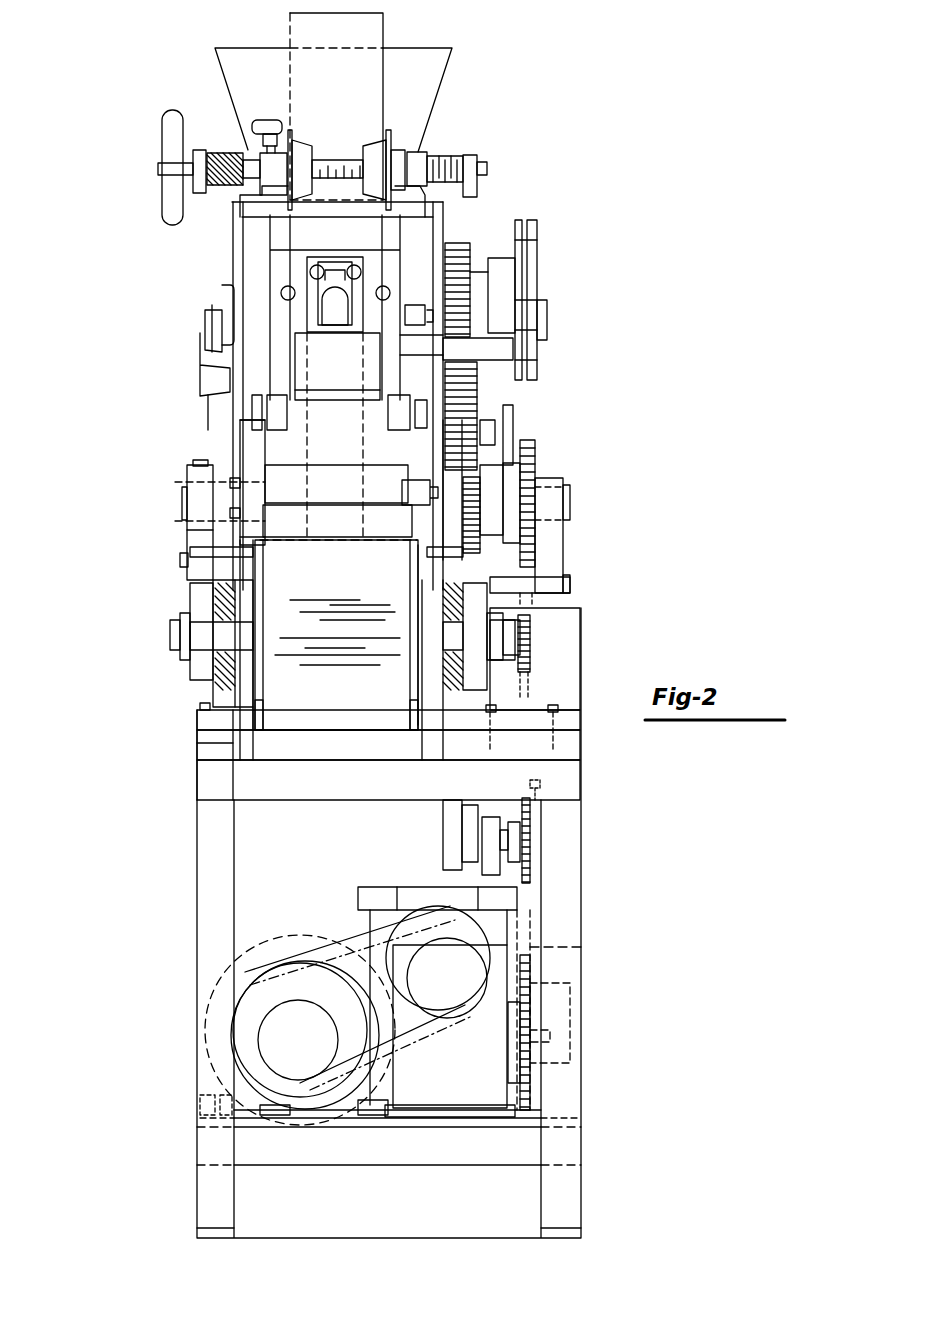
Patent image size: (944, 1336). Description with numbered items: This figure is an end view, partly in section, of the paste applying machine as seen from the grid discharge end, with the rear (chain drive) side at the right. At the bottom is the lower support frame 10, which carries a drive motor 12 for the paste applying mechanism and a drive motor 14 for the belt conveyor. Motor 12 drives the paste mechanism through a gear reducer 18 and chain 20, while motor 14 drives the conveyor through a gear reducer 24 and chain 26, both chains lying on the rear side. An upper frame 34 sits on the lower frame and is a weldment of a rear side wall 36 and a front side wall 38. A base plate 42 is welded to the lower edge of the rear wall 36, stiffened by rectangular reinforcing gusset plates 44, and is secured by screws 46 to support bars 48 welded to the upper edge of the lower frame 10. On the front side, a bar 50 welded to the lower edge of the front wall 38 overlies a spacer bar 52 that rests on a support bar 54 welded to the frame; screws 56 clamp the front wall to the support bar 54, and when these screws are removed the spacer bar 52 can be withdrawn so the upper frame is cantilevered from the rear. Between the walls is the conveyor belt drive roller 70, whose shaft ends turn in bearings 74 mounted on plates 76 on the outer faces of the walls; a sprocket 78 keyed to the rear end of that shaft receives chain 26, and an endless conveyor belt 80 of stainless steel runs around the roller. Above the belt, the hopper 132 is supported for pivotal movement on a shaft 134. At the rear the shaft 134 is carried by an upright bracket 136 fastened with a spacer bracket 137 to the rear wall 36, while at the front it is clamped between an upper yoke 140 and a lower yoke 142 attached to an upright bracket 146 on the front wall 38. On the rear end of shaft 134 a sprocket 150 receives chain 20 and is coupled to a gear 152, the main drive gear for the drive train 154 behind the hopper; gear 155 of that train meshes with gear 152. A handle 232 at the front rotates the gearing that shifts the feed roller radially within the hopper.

The lower support frame 10 is at (182, 932).
The drive motor 12 is at (272, 955).
The drive motor 14 is at (295, 1095).
The gear reducer 18 is at (427, 912).
The chain 20 is at (555, 947).
The gear reducer 24 is at (455, 1040).
The chain 26 is at (530, 690).
The upper frame 34 is at (183, 582).
The rear side wall 36 is at (447, 695).
The front side wall 38 is at (228, 700).
The base plate 42 is at (575, 720).
The reinforcing gusset plates 44 is at (575, 628).
The screws 46 is at (572, 710).
The support bars 48 is at (575, 745).
The bar 50 is at (200, 718).
The spacer bar 52 is at (200, 733).
The support bar 54 is at (200, 752).
The screws 56 is at (200, 707).
The conveyor belt drive roller 70 is at (420, 725).
The bearings 74 is at (195, 645).
The plates 76 is at (205, 597).
The sprocket 78 is at (525, 665).
The endless conveyor belt 80 is at (350, 720).
The hopper 132 is at (232, 270).
The shaft 134 is at (567, 490).
The upright bracket 136 is at (555, 555).
The spacer bracket 137 is at (538, 585).
The upper yoke 140 is at (190, 470).
The lower yoke 142 is at (195, 530).
The upright bracket 146 is at (195, 575).
The sprocket 150 is at (530, 478).
The gear 152 is at (470, 515).
The drive train 154 is at (543, 312).
The gear 155 is at (480, 395).
The handle 232 is at (200, 330).